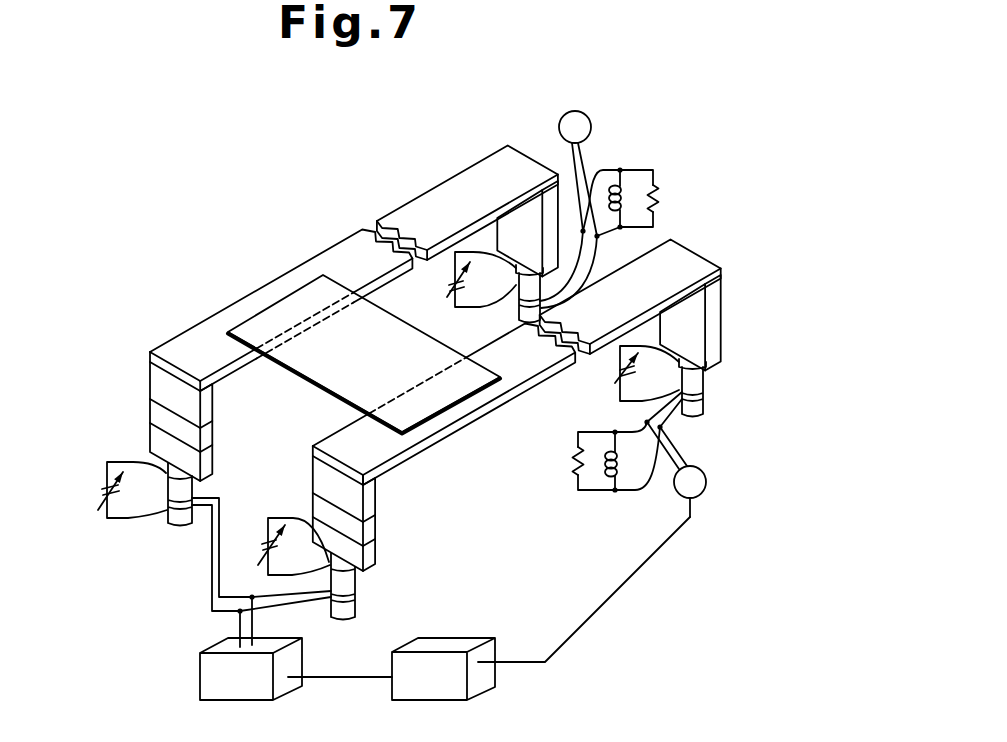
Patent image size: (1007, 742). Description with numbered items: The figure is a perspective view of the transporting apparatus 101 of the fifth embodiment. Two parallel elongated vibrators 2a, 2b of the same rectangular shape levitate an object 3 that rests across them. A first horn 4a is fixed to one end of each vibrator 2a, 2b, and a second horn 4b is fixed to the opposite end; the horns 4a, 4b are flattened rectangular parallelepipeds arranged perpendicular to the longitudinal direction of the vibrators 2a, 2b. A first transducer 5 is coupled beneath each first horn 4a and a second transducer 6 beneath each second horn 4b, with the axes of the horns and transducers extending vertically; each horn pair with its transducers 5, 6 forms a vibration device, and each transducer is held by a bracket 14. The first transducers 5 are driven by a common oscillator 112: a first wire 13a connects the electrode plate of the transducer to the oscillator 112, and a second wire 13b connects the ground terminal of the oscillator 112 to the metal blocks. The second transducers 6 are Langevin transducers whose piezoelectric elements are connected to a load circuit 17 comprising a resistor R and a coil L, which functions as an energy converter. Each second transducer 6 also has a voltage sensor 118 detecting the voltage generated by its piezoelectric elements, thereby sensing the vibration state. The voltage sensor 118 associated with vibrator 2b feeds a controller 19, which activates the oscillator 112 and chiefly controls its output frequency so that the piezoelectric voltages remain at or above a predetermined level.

The transporting apparatus 101 is at (140, 262).
The vibrator 2a is at (340, 246).
The vibrator 2b is at (468, 424).
The object 3 is at (312, 373).
The first horn 4a is at (149, 420).
The second horn 4b is at (517, 228).
The first transducer 5 is at (162, 521).
The second transducer 6 is at (514, 296).
The spring clamp member 14 is at (100, 487).
The load circuit 17 is at (672, 163).
The coil L is at (622, 187).
The resistor R is at (659, 196).
The voltage sensor 118 is at (557, 126).
The first wire 13a is at (306, 603).
The second wire 13b is at (212, 600).
The oscillator 112 is at (208, 670).
The controller 19 is at (449, 642).